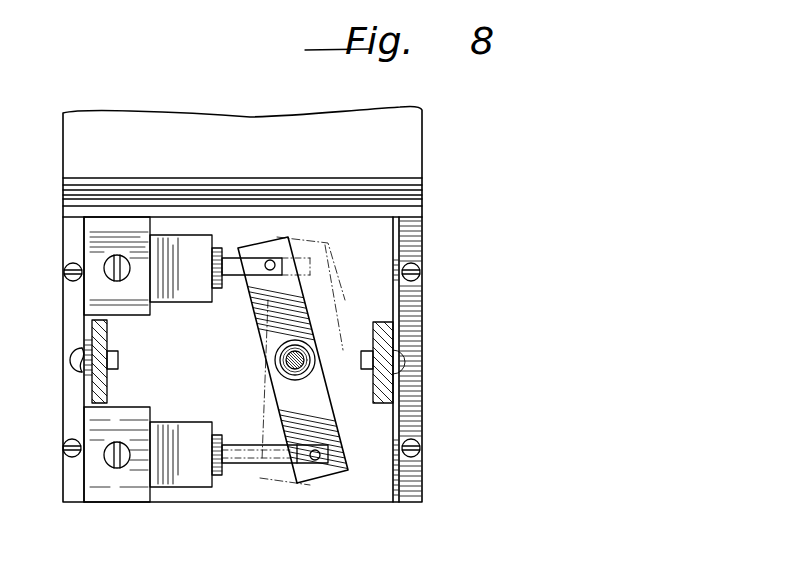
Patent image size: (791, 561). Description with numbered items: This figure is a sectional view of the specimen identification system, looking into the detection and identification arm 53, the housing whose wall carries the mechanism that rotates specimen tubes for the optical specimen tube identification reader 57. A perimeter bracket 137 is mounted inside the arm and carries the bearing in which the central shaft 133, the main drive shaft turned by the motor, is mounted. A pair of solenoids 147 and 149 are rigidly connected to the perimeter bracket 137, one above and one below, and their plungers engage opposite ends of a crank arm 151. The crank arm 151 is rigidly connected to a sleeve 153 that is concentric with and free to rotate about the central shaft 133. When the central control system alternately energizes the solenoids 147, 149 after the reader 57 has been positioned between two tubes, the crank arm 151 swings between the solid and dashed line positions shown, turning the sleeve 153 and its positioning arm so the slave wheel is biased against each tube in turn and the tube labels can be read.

The detection and identification arm 53 is at (410, 142).
The optical specimen tube identification reader 57 is at (433, 230).
The central shaft 133 is at (290, 363).
The perimeter bracket 137 is at (95, 333).
The solenoid 147 is at (192, 392).
The solenoid 149 is at (183, 302).
The crank arm 151 is at (305, 310).
The sleeve 153 is at (290, 374).